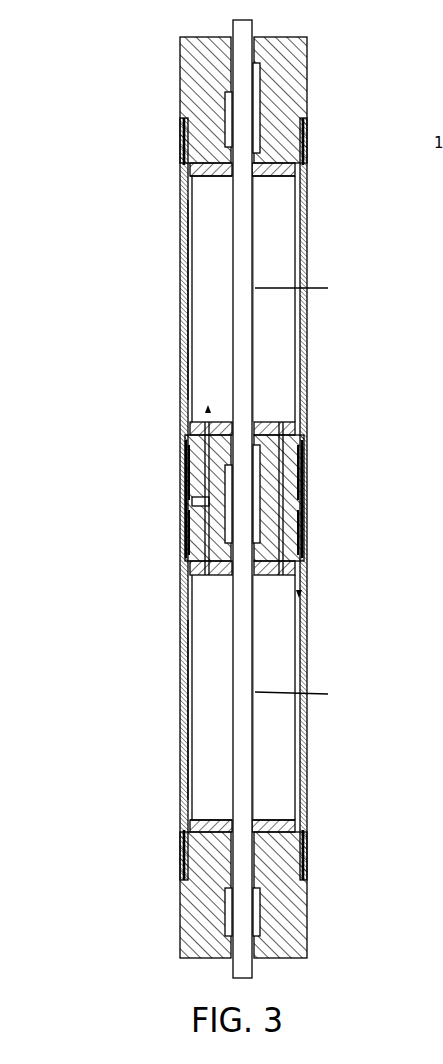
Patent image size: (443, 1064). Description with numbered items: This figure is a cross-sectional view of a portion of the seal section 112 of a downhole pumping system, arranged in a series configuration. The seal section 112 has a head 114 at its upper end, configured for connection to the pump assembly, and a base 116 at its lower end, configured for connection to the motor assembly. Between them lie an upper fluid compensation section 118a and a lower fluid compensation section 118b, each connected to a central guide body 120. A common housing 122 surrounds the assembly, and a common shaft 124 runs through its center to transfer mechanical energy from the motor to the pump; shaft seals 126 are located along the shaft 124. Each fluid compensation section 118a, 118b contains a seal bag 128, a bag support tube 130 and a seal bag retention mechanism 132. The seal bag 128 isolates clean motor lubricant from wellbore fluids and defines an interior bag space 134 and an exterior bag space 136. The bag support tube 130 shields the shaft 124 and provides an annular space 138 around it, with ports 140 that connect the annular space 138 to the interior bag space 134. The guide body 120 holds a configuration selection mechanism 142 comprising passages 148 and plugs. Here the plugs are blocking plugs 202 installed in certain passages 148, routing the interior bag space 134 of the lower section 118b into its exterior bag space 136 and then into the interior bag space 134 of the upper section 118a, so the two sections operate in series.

The seal section 112 is at (418, 466).
The head 114 is at (303, 53).
The base 116 is at (300, 867).
The upper fluid compensation section 118a is at (110, 178).
The lower fluid compensation section 118b is at (135, 636).
The guide body 120 is at (166, 459).
The housing 122 is at (306, 212).
The shaft 124 is at (243, 335).
The shaft seals 126 is at (260, 109).
The seal bag 128 is at (295, 233).
The bag support tube 130 is at (307, 492).
The seal bag retention mechanism 132 is at (304, 138).
The interior bag space 134 is at (178, 274).
The exterior bag space 136 is at (178, 318).
The annular space 138 is at (253, 368).
The ports 140 is at (305, 176).
The configuration selection mechanism 142 is at (330, 516).
The passages 148 is at (182, 478).
The blocking plugs 202 is at (182, 492).